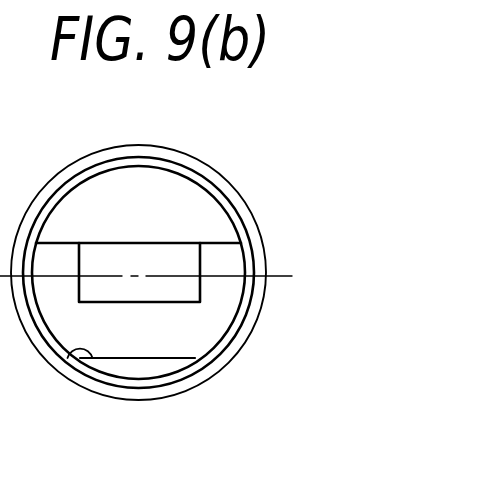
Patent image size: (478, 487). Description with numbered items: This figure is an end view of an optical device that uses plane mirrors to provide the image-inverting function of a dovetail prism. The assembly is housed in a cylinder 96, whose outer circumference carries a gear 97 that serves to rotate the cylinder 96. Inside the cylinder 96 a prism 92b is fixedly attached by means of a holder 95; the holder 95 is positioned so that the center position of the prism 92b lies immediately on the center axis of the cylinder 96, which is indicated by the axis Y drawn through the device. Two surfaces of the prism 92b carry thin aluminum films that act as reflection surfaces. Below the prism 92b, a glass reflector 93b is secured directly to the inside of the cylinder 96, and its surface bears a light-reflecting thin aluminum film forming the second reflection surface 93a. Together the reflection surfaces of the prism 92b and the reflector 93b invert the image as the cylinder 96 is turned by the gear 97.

The prism 92b is at (101, 243).
The second reflection surface 93a is at (66, 377).
The glass reflector 93b is at (113, 371).
The holder 95 is at (176, 185).
The cylinder 96 is at (223, 343).
The gear 97 is at (164, 394).
The axis Y is at (282, 280).